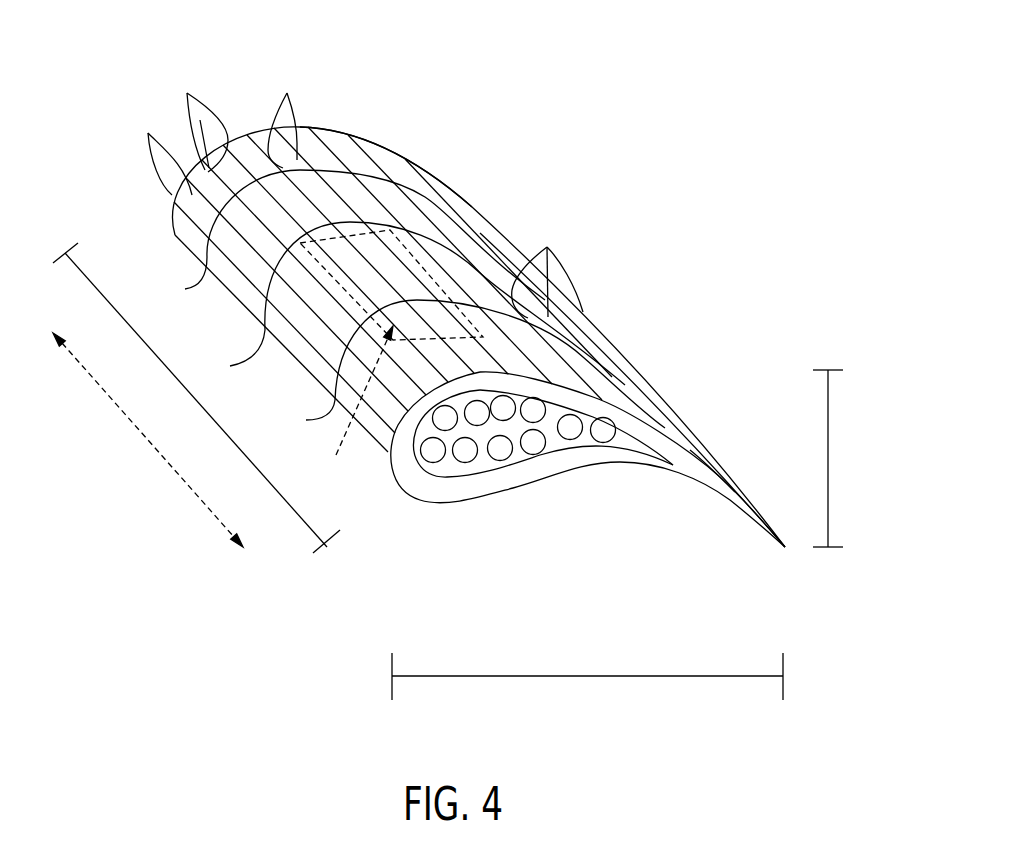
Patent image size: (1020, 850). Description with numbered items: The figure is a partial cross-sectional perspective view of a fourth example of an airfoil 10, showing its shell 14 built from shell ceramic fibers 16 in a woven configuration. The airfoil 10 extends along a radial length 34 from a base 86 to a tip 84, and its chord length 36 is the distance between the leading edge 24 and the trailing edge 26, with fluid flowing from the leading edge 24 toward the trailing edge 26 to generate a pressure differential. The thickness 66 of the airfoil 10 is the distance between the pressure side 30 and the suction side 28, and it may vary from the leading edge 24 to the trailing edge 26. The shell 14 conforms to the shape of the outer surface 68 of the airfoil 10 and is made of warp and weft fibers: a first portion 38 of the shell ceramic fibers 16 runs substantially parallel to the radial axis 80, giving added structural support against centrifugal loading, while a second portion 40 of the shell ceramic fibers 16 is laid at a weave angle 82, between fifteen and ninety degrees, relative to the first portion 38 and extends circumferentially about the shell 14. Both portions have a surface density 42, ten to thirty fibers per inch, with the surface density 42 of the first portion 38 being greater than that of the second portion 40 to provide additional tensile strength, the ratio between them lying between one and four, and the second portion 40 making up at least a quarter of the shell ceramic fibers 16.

The airfoil 10 is at (406, 65).
The shell 14 is at (728, 498).
The shell ceramic fibers 16 is at (535, 448).
The leading edge 24 is at (219, 329).
The trailing edge 26 is at (658, 346).
The suction side 28 is at (447, 247).
The pressure side 30 is at (605, 489).
The radial length 34 is at (183, 387).
The chord length 36 is at (468, 678).
The first portion of shell ceramic fibers 38 is at (148, 133).
The second portion of shell ceramic fibers 40 is at (254, 352).
The surface density 42 is at (359, 405).
The thickness 66 is at (829, 460).
The outer surface 68 is at (647, 477).
The radial axis 80 is at (187, 480).
The weave angle 82 is at (303, 357).
The tip 84 is at (716, 474).
The base 86 is at (390, 142).